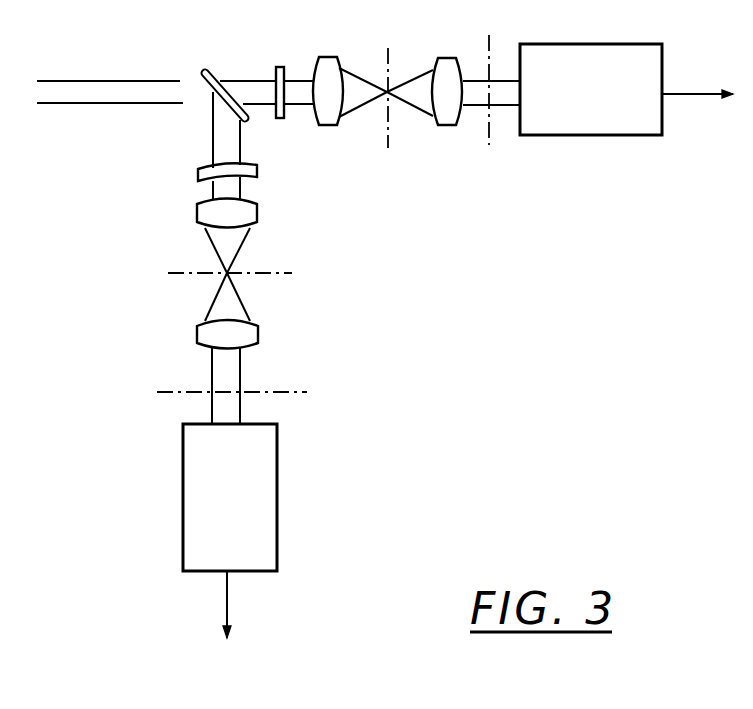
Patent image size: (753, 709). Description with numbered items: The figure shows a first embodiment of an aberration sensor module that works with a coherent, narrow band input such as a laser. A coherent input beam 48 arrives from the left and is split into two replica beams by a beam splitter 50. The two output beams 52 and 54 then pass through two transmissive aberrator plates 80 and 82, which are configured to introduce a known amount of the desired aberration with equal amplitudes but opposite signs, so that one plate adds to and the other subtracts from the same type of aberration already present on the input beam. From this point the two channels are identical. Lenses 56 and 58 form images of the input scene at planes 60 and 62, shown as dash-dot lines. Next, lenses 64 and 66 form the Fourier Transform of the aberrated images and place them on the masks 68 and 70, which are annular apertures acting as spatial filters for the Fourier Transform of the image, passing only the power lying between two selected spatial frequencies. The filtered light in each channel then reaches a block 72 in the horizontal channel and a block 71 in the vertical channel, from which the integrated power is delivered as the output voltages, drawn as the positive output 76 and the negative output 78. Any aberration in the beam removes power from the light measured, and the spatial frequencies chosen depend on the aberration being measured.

The coherent input beam 48 is at (110, 105).
The beam splitter 50 is at (206, 84).
The output beam 52 is at (266, 117).
The output beam 54 is at (212, 137).
The lens 56 is at (327, 125).
The lens 58 is at (258, 212).
The plane 60 is at (388, 60).
The plane 62 is at (287, 272).
The lens 64 is at (448, 58).
The lens 66 is at (258, 335).
The mask 68 is at (492, 38).
The mask 70 is at (290, 391).
The detector 71 is at (278, 506).
The detector 72 is at (582, 135).
The output signal Vi+ 76 is at (690, 96).
The output signal Vi- 78 is at (230, 594).
The transmissive aberrator plate 80 is at (283, 67).
The transmissive aberrator plate 82 is at (198, 174).